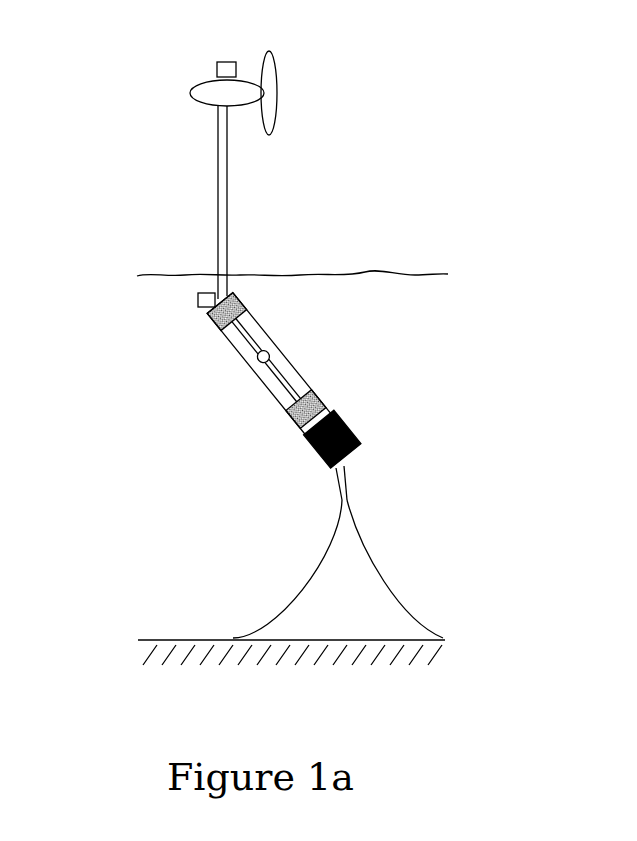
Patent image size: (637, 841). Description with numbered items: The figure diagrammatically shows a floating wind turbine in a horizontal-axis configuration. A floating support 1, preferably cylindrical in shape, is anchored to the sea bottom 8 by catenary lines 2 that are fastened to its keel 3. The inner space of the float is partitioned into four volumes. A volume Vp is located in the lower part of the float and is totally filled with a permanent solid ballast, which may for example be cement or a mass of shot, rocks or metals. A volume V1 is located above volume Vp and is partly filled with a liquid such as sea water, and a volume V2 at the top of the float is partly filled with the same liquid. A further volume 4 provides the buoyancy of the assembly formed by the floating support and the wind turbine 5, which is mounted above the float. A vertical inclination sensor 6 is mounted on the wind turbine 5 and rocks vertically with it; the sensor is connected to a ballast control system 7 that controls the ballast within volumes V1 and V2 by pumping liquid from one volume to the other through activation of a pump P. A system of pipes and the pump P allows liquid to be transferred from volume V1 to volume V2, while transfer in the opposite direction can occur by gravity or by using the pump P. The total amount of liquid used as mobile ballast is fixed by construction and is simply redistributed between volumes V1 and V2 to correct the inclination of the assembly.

The floating support 1 is at (260, 394).
The catenary lines 2 is at (329, 523).
The keel 3 is at (313, 451).
The volume 4 is at (228, 347).
The wind turbine 5 is at (213, 205).
The vertical inclination sensor 6 is at (206, 64).
The ballast control system 7 is at (189, 296).
The seabed 8 is at (291, 652).
The pump P is at (277, 357).
The volume V1 is at (332, 401).
The volume V2 is at (245, 301).
The volume Vp is at (358, 429).